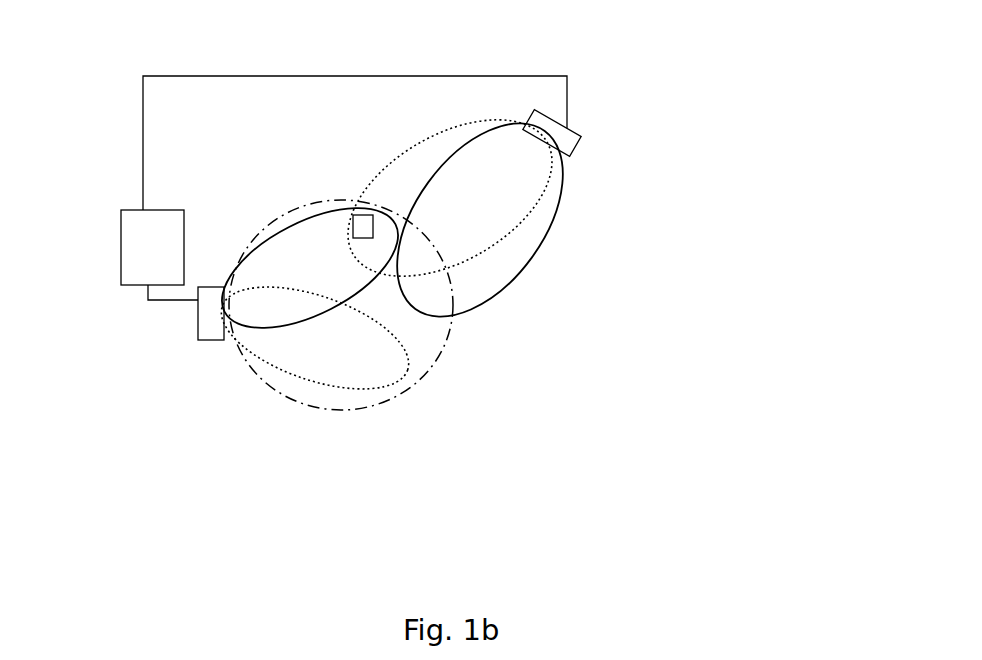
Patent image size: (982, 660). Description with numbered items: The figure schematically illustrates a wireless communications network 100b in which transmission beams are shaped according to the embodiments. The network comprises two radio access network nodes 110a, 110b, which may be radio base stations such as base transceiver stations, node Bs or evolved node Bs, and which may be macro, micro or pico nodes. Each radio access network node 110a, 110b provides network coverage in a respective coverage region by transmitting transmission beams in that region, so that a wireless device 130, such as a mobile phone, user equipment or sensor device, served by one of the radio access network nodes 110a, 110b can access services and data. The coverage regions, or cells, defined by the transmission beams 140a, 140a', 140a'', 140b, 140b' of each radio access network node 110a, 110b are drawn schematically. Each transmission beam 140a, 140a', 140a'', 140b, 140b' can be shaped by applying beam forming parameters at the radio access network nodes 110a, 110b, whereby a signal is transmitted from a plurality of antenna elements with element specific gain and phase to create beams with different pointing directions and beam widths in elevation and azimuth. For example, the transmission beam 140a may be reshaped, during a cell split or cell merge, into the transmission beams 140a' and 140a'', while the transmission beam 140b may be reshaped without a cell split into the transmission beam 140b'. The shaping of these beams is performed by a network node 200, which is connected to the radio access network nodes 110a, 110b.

The wireless communications network 100b is at (700, 207).
The radio access network node 110a is at (197, 312).
The radio access network node 110b is at (583, 133).
The wireless device 130 is at (353, 237).
The transmission beam 140a is at (310, 252).
The transmission beam 140a' is at (341, 275).
The transmission beam 140a'' is at (315, 367).
The transmission beam 140b is at (493, 219).
The transmission beam 140b' is at (450, 197).
The network node 200 is at (120, 240).